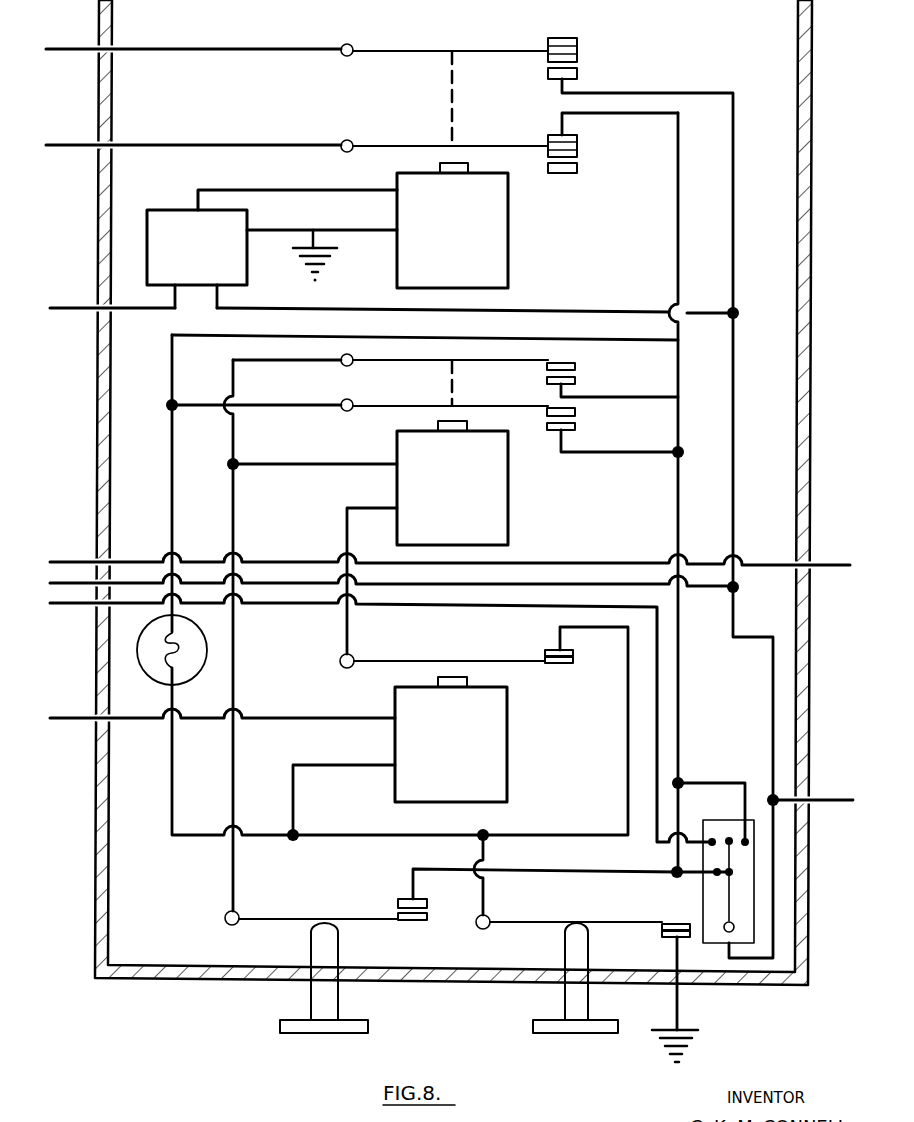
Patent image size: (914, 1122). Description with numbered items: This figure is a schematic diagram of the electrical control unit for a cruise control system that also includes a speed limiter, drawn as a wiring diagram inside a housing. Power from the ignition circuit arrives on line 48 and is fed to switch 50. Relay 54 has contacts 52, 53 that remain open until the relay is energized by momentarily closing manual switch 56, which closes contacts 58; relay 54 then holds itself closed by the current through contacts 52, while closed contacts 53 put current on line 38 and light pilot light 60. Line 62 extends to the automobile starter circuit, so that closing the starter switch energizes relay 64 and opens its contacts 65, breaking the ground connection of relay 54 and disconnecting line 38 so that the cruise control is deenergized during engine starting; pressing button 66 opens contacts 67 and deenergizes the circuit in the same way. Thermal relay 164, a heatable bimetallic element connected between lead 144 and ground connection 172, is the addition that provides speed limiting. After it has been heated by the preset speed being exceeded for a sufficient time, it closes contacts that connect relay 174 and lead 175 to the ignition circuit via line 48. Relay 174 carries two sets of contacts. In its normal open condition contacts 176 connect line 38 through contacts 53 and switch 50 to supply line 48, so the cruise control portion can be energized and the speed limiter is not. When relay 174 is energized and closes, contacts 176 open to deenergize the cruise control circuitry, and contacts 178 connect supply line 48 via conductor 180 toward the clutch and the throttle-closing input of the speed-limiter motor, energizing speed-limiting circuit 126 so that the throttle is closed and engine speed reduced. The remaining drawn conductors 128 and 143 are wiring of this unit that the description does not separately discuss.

The conductor 180 is at (237, 48).
The line 38 is at (200, 144).
The thermal relay 164 is at (170, 218).
The lead 175 is at (265, 189).
The ground connection 172 is at (318, 238).
The relay 174 is at (502, 245).
The contacts 178 is at (582, 56).
The contacts 176 is at (582, 151).
The lead 144 is at (72, 312).
The contacts 52 is at (577, 381).
The contacts 53 is at (577, 428).
The relay 54 is at (497, 503).
The line 48 is at (737, 447).
The conductor 128 is at (65, 561).
The conductor 143 is at (55, 586).
The speed-limiting circuit 126 is at (72, 606).
The pilot light 60 is at (153, 668).
The line 62 is at (66, 721).
The contacts 65 is at (546, 651).
The relay 64 is at (495, 757).
The switch 50 is at (721, 830).
The contacts 58 is at (404, 902).
The contacts 67 is at (668, 937).
The manual switch 56 is at (318, 1027).
The button 66 is at (568, 1030).